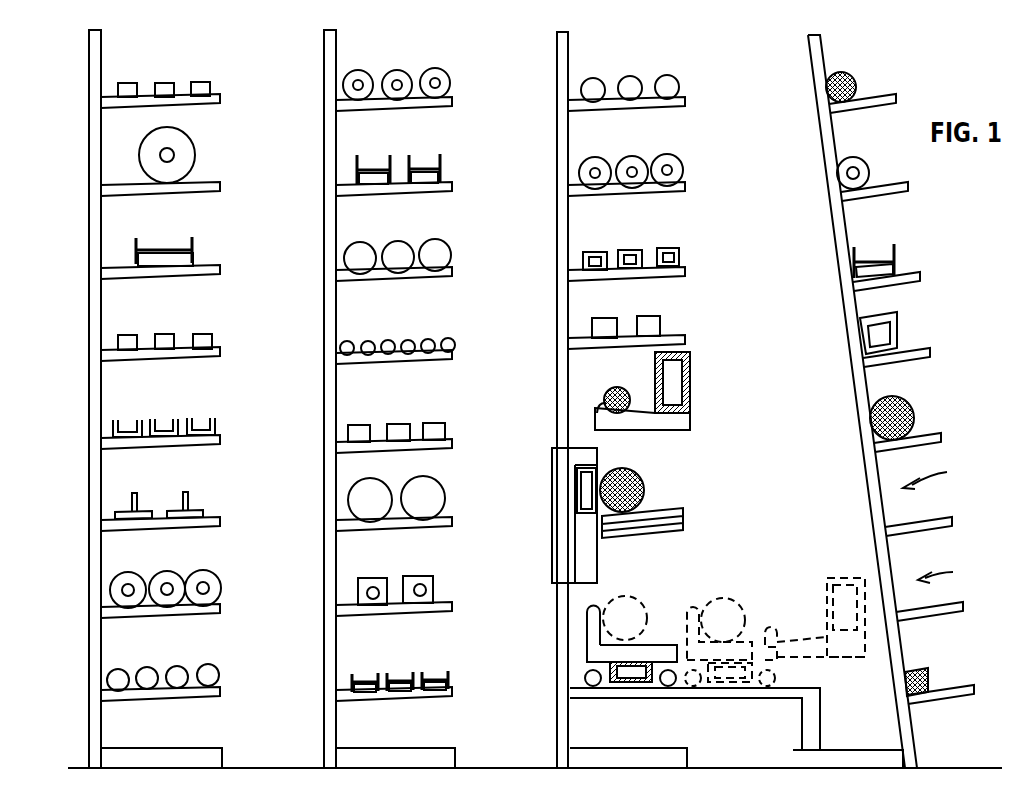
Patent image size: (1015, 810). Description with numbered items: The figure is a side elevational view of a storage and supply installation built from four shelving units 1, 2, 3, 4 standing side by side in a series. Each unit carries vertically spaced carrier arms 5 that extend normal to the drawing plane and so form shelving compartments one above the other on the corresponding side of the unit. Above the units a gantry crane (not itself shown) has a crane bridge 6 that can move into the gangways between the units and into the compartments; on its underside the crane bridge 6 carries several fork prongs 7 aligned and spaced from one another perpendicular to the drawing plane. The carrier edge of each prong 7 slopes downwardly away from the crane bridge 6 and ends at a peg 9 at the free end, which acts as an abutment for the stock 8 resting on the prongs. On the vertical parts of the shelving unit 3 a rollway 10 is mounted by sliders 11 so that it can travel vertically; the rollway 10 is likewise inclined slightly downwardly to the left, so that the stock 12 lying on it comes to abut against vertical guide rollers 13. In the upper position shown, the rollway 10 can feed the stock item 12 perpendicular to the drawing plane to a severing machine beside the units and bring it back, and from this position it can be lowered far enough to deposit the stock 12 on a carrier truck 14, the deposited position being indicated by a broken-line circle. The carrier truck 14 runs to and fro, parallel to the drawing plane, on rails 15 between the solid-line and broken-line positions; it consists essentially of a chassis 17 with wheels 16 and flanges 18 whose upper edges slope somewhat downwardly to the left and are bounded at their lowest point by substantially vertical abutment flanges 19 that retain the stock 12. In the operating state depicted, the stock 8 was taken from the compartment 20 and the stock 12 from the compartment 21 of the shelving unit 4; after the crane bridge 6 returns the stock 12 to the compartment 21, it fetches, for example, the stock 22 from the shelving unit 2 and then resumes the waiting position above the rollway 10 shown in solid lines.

The shelving unit 1 is at (95, 171).
The shelving unit 2 is at (324, 310).
The shelving unit 3 is at (557, 226).
The shelving unit 4 is at (836, 252).
The carrier arm 5 is at (168, 279).
The crane bridge 6 is at (688, 353).
The fork prong 7 is at (668, 424).
The stock 8 is at (622, 390).
The peg 9 is at (596, 410).
The rollway 10 is at (684, 518).
The slider 11 is at (558, 533).
The stock 12 is at (645, 490).
The vertical guide roller 13 is at (583, 482).
The carrier truck 14 is at (587, 638).
The rails 15 is at (750, 697).
The wheel 16 is at (595, 685).
The chassis 17 is at (643, 662).
The flange 18 is at (587, 655).
The abutment flange 19 is at (587, 609).
The compartment 20 is at (937, 473).
The compartment 21 is at (951, 573).
The stock 22 is at (440, 75).